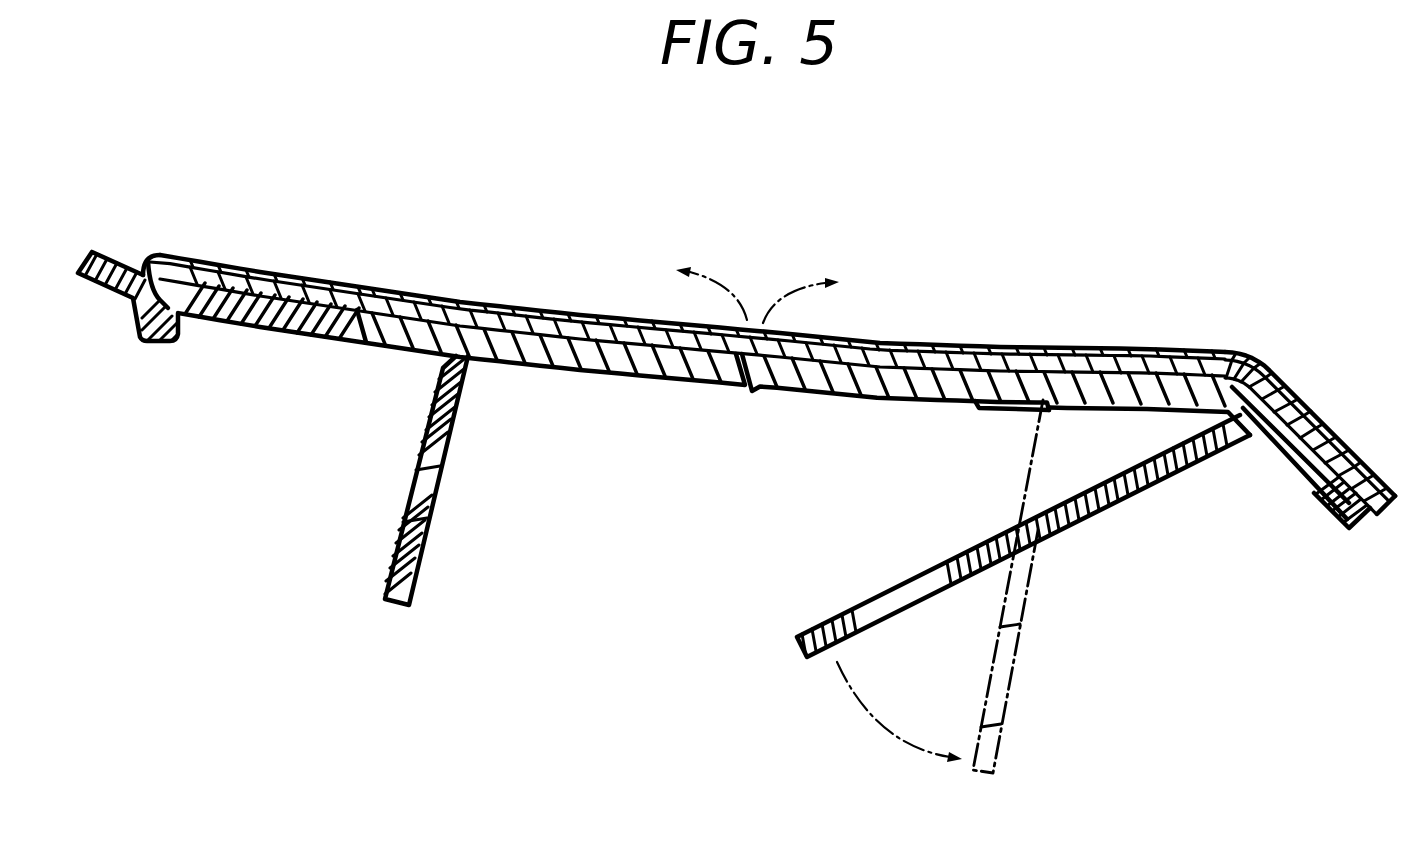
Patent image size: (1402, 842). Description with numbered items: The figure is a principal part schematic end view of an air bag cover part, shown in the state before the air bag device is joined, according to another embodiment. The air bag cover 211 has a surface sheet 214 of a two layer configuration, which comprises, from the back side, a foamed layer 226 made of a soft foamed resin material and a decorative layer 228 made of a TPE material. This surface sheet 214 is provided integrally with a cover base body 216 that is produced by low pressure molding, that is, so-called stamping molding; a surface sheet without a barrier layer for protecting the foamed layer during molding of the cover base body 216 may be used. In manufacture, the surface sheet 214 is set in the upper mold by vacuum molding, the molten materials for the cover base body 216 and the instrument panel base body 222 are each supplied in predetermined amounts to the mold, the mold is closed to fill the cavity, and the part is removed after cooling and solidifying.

The air bag cover 211 is at (1128, 336).
The surface sheet 214 is at (998, 208).
The cover base body 216 is at (435, 337).
The instrument panel base body 222 is at (1284, 435).
The foamed layer 226 is at (960, 340).
The decorative layer 228 is at (898, 338).